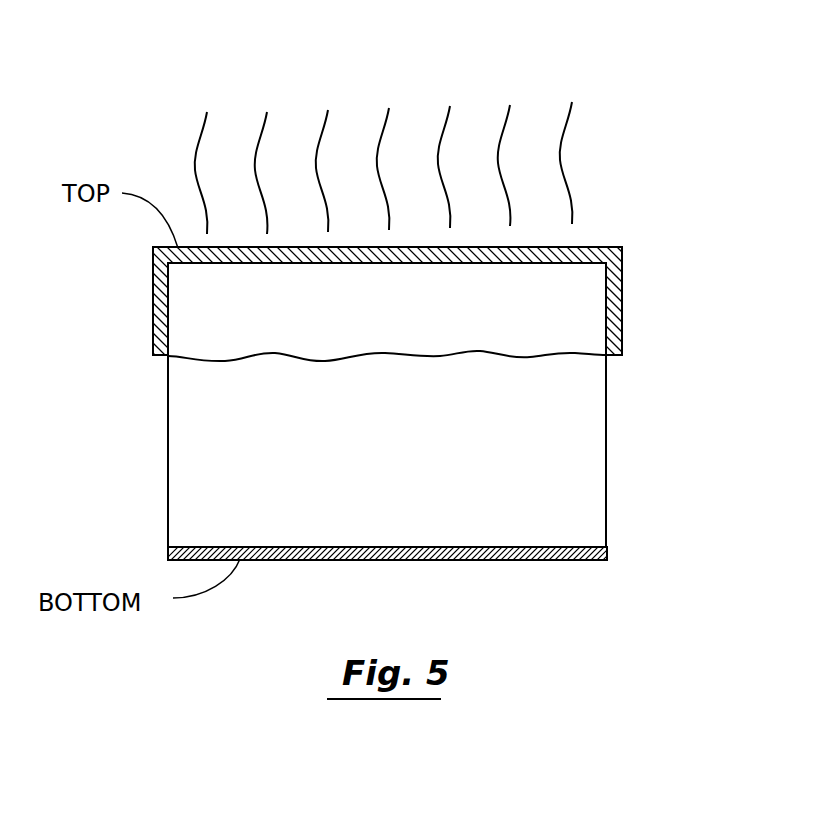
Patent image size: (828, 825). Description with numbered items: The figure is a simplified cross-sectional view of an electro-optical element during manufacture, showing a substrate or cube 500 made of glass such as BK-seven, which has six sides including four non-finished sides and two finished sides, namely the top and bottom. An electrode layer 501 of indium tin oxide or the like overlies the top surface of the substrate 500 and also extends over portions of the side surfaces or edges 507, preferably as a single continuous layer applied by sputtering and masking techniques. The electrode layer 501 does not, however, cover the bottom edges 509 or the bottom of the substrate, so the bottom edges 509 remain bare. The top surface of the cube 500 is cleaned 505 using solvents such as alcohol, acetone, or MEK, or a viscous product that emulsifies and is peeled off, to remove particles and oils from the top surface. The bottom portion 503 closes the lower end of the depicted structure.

The substrate 500 is at (400, 316).
The electrode layer 501 is at (622, 277).
The bottom plate 503 is at (548, 559).
The cleaning 505 is at (390, 128).
The side surfaces or edges 507 is at (197, 295).
The bottom edges 509 is at (567, 477).